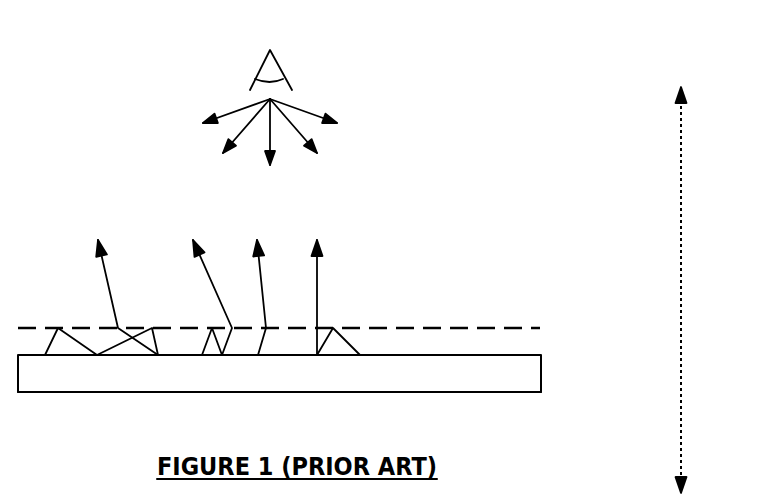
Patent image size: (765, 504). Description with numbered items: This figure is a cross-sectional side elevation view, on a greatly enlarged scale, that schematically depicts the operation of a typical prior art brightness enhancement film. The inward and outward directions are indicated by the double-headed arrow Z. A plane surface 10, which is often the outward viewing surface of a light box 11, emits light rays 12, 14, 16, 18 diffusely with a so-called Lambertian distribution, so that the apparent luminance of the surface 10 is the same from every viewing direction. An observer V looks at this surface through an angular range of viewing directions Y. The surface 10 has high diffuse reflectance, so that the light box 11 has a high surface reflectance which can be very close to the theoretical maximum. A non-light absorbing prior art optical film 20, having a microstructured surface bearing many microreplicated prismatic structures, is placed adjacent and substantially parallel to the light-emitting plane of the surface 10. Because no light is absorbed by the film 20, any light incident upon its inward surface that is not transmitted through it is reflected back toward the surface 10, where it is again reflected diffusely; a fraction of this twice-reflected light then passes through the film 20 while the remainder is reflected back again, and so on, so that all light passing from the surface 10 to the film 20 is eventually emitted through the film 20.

The plane surface 10 is at (528, 355).
The light box 11 is at (541, 388).
The light ray 12 is at (105, 265).
The light ray 14 is at (222, 308).
The light ray 16 is at (258, 273).
The light ray 18 is at (317, 275).
The optical film 20 is at (448, 327).
The observer V is at (283, 62).
The viewing directions Y is at (297, 108).
The double-headed arrow Z is at (680, 198).